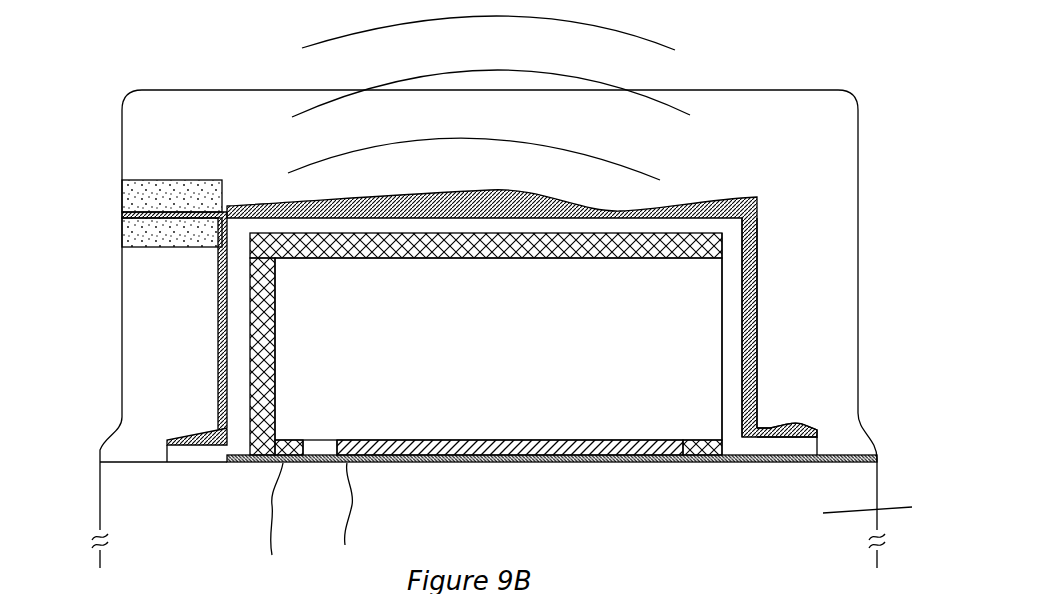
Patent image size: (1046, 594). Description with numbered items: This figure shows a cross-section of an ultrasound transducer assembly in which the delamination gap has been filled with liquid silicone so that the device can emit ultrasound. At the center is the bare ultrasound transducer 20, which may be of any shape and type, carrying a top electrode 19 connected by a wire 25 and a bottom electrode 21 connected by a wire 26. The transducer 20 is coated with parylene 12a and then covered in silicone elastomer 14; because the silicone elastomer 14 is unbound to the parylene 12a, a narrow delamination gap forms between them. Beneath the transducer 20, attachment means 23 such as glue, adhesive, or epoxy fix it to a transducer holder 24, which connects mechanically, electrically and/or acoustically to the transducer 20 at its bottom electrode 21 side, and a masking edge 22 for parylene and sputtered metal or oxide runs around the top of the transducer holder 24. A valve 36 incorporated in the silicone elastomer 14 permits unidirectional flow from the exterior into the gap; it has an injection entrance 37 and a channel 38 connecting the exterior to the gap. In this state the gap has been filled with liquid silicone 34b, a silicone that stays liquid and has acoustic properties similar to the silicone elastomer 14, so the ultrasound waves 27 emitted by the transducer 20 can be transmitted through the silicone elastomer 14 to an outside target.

The silicone elastomer 14 is at (808, 147).
The ultrasound waves 27 is at (674, 165).
The valve 36 is at (155, 164).
The injection entrance 37 is at (105, 219).
The channel 38 is at (160, 220).
The liquid silicone 34b is at (730, 203).
The top electrode 19 is at (757, 228).
The parylene 12a is at (732, 277).
The ultrasound transducer 20 is at (697, 332).
The bottom electrode 21 is at (683, 440).
The masking edge 22 is at (827, 423).
The attachment means 23 is at (700, 460).
The transducer holder 24 is at (882, 509).
The wire 25 is at (258, 544).
The wire 26 is at (363, 522).